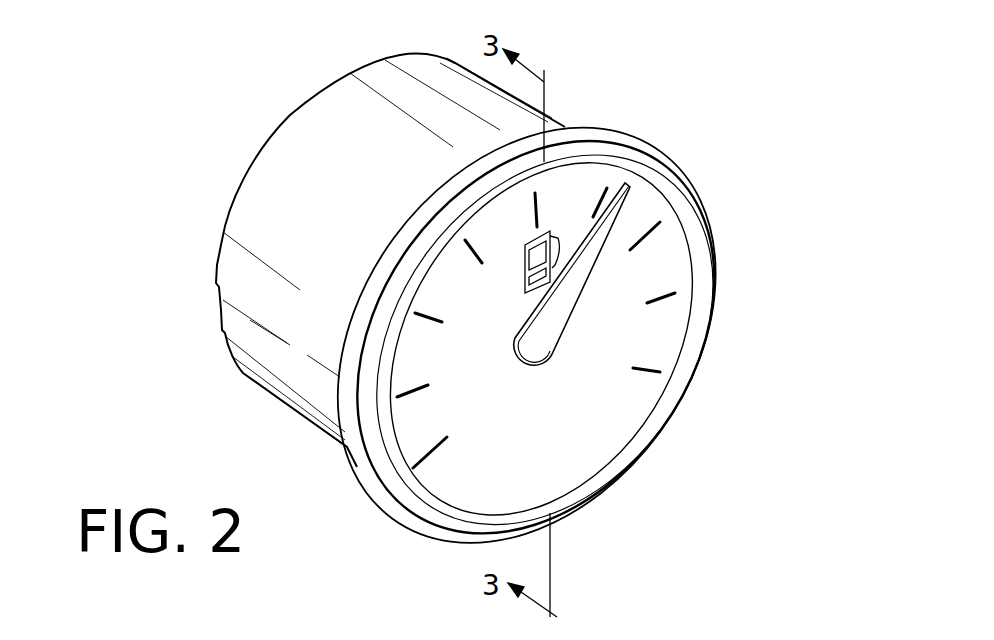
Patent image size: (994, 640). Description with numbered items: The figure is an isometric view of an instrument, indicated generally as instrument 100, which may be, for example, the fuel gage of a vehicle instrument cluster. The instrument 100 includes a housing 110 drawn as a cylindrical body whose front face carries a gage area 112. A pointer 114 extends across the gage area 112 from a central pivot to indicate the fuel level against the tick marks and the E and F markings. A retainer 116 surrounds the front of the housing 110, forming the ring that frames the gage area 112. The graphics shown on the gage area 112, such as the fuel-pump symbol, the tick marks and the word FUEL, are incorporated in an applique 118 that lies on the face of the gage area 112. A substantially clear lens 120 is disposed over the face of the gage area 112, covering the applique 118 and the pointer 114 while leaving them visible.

The instrument 100 is at (160, 217).
The housing 110 is at (295, 167).
The gage area 112 is at (623, 290).
The pointer 114 is at (560, 315).
The retainer 116 is at (366, 465).
The applique 118 is at (420, 352).
The lens 120 is at (570, 458).